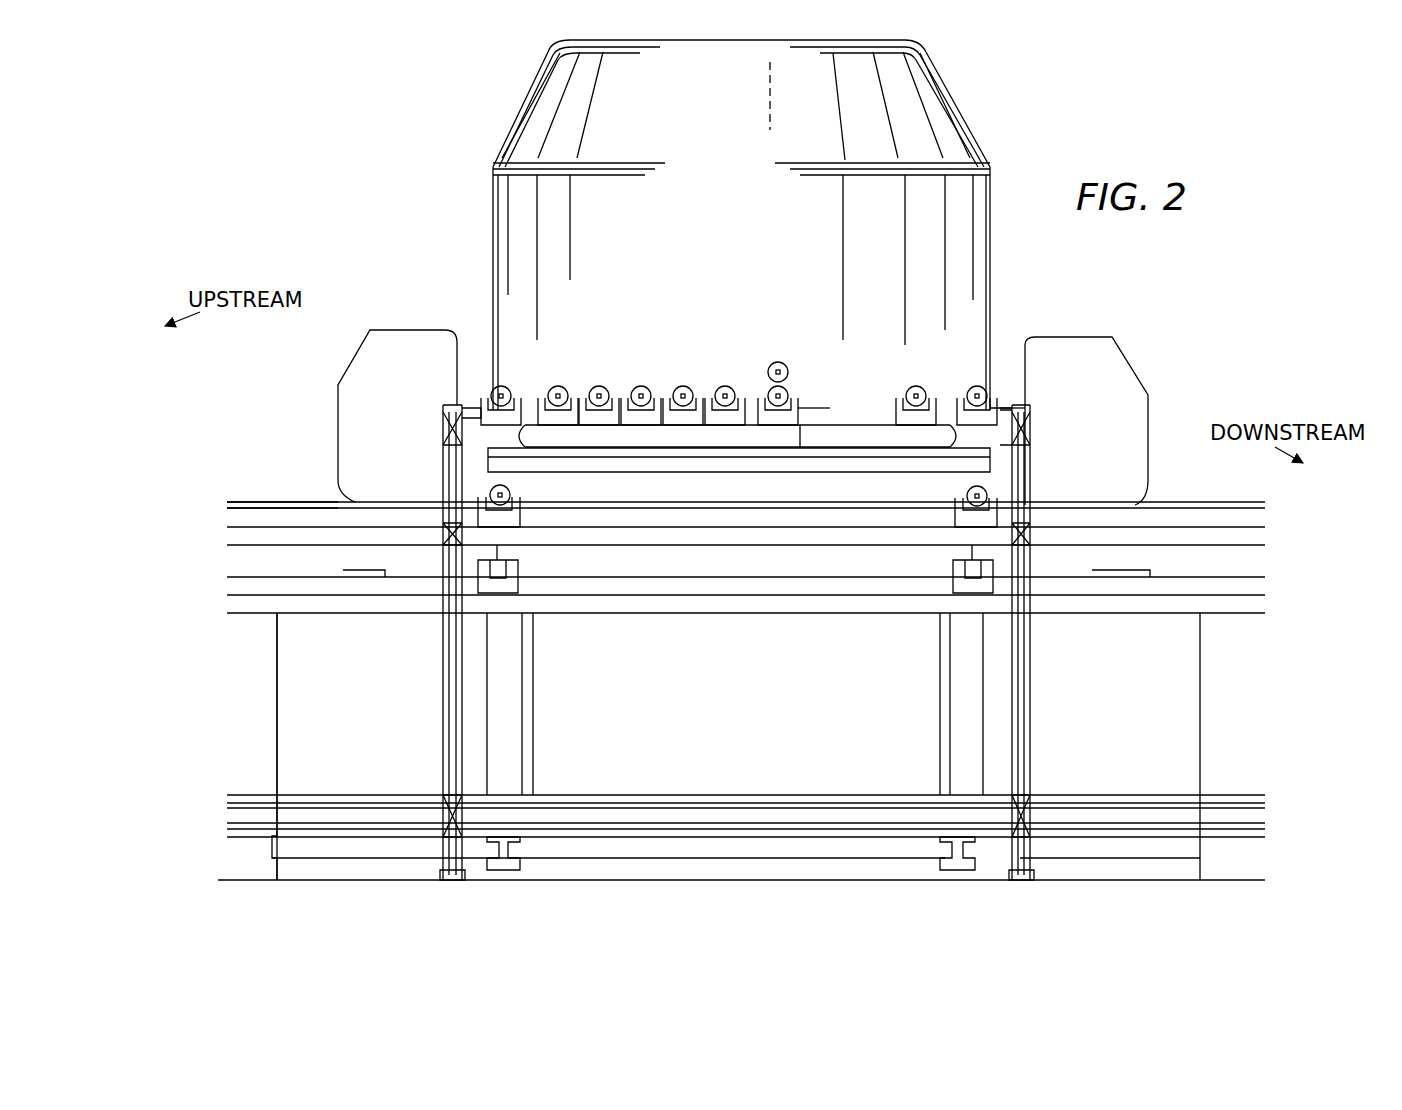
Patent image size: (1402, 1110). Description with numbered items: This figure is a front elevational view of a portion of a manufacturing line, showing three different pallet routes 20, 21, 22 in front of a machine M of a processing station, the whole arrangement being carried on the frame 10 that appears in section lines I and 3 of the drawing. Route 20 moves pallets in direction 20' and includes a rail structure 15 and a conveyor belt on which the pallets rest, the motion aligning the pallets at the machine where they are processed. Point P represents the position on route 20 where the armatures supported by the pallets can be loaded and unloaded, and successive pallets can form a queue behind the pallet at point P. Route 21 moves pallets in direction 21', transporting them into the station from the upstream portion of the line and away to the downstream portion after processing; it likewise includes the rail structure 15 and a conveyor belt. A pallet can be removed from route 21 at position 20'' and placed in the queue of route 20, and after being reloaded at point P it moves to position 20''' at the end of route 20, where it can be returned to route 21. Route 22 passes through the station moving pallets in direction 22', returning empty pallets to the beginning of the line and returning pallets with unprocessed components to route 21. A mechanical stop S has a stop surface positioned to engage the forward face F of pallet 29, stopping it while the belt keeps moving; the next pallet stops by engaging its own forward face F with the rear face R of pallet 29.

The machine M is at (948, 143).
The conveyor frame 10 is at (518, 505).
The rail structure 15 is at (952, 443).
The rear face R is at (716, 400).
The forward face F is at (752, 410).
The point P is at (796, 378).
The mechanical stop S is at (805, 410).
The pallet 29 is at (770, 440).
The pallet route 20 is at (1025, 351).
The direction 20' is at (560, 337).
The position 20'' is at (405, 396).
The position 20''' is at (1086, 398).
The section line I is at (640, 365).
The section line 3 is at (495, 330).
The pallet route 21 is at (282, 485).
The direction 21' is at (262, 372).
The pallet route 22 is at (242, 746).
The direction 22' is at (877, 706).